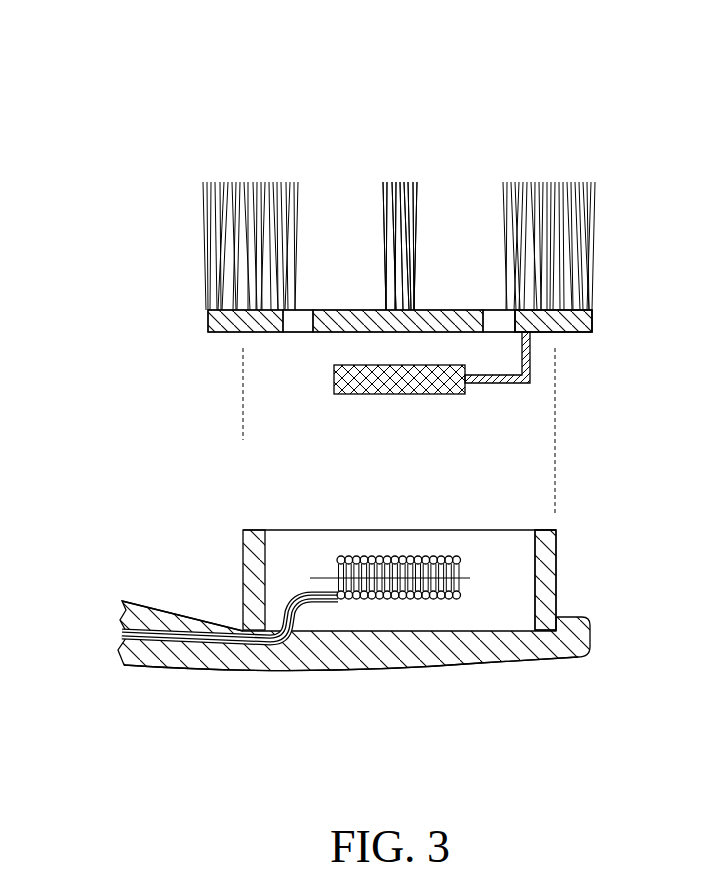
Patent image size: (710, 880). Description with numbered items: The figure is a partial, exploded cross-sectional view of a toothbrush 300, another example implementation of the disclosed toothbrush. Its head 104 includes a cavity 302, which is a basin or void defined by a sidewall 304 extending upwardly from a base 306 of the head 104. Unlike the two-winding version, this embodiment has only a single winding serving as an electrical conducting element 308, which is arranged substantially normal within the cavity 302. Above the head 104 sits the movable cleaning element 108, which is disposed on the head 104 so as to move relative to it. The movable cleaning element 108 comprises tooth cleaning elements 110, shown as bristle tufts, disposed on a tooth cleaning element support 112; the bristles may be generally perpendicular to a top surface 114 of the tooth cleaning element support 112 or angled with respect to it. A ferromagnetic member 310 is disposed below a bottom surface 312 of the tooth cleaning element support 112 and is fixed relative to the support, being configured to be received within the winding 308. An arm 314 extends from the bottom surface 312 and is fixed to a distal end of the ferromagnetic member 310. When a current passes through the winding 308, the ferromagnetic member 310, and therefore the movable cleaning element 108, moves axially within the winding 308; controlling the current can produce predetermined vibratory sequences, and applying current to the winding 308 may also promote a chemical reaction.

The toothbrush 300 is at (211, 123).
The movable cleaning element 108 is at (604, 160).
The tooth cleaning elements 110 is at (213, 222).
The tooth cleaning element support 112 is at (215, 318).
The top surface 114 is at (458, 308).
The ferromagnetic member 310 is at (354, 365).
The bottom surface 312 is at (582, 333).
The arm 314 is at (531, 384).
The cavity 302 is at (495, 545).
The sidewall 304 is at (540, 567).
The base 306 is at (370, 640).
The electrical conducting element 308 is at (342, 556).
The head 104 is at (580, 678).